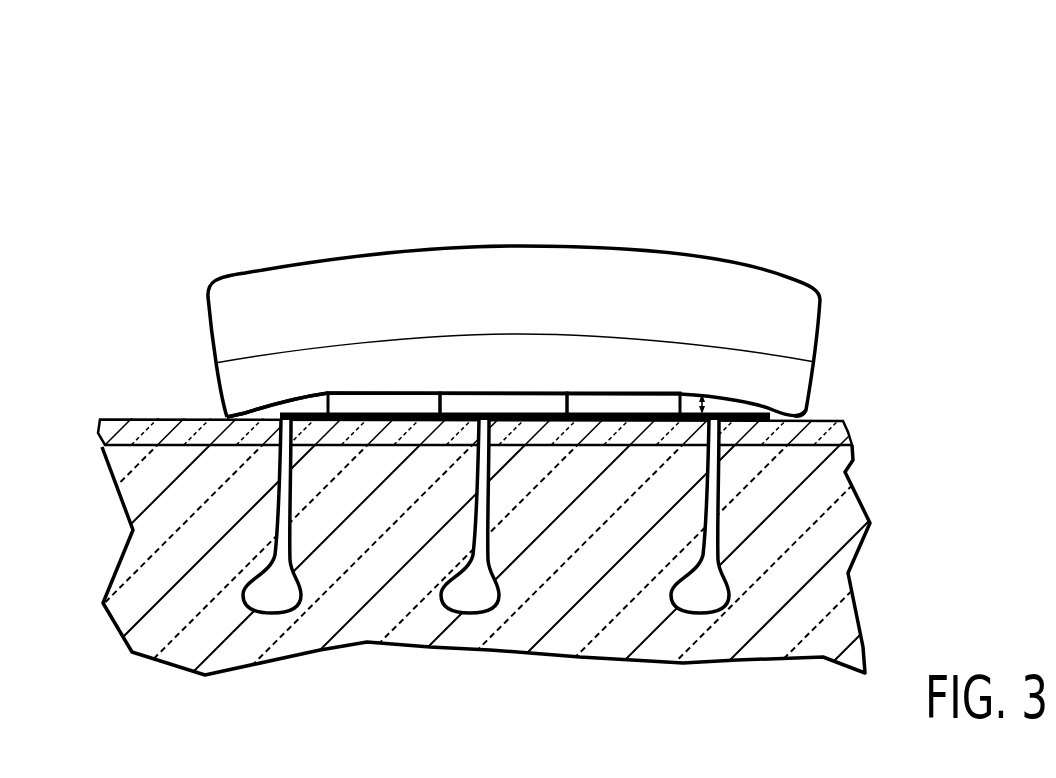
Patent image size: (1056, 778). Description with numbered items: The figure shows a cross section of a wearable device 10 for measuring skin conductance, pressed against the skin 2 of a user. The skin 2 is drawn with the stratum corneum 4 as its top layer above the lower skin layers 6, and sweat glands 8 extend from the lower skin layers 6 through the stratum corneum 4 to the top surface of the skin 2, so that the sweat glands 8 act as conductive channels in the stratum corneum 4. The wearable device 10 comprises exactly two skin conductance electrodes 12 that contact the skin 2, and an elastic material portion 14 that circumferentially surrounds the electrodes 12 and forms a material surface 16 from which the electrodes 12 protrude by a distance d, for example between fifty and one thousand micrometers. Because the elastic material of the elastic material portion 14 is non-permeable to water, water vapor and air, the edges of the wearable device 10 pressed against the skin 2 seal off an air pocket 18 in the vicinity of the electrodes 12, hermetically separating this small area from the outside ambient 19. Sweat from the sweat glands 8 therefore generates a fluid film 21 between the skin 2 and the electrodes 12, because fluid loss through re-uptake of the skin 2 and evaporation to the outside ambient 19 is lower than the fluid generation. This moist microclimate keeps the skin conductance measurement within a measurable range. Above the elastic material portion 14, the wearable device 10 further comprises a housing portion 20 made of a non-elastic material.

The skin 2 is at (527, 545).
The stratum corneum 4 is at (100, 426).
The lower skin layers 6 is at (133, 502).
The sweat glands 8 is at (277, 550).
The wearable device 10 is at (545, 260).
The skin conductance electrodes 12 is at (365, 404).
The elastic material portion 14 is at (792, 396).
The material surface 16 is at (530, 397).
The air pocket 18 is at (510, 410).
The outside ambient 19 is at (137, 337).
The housing portion 20 is at (805, 300).
The fluid film 21 is at (301, 412).
The distance d is at (707, 403).